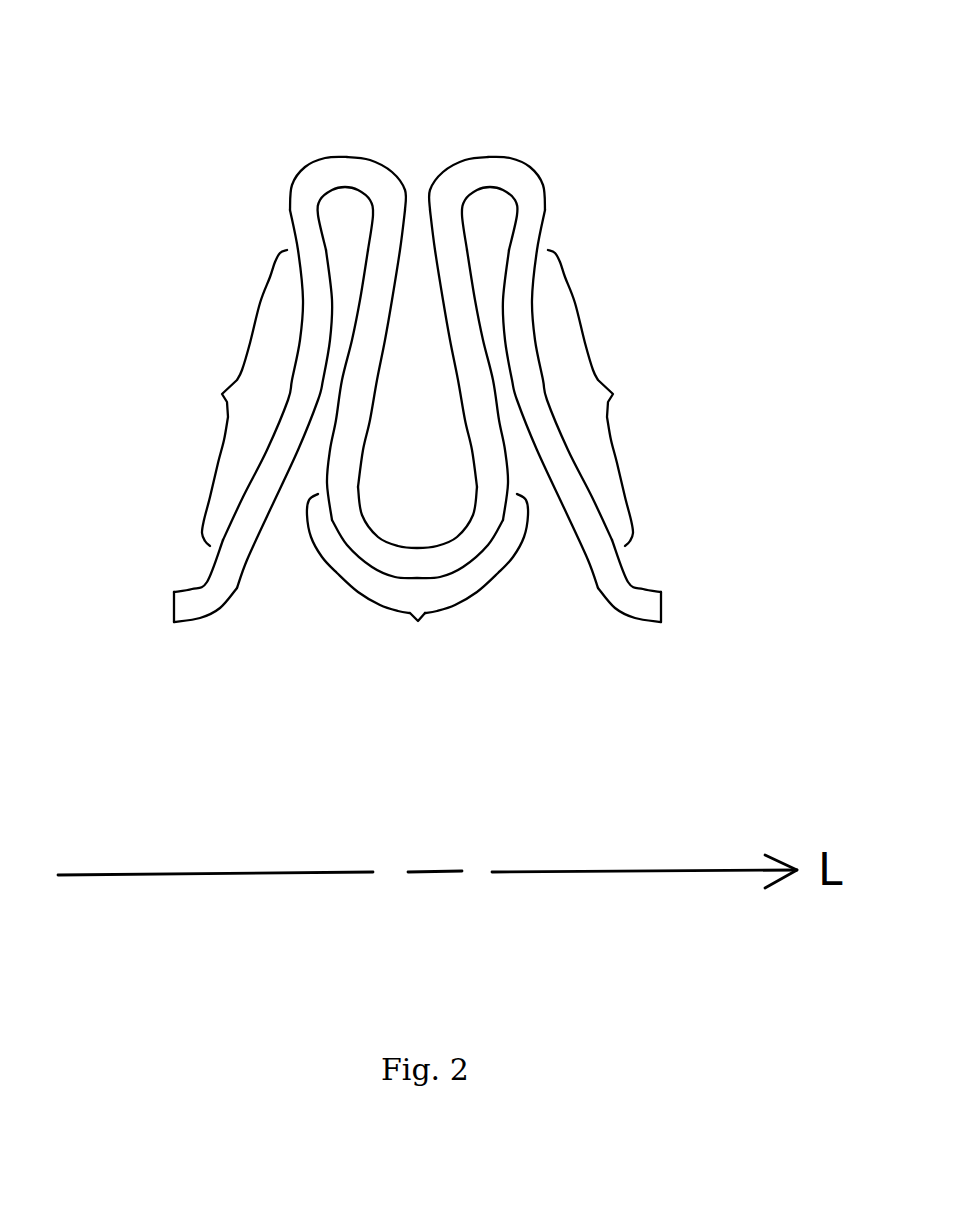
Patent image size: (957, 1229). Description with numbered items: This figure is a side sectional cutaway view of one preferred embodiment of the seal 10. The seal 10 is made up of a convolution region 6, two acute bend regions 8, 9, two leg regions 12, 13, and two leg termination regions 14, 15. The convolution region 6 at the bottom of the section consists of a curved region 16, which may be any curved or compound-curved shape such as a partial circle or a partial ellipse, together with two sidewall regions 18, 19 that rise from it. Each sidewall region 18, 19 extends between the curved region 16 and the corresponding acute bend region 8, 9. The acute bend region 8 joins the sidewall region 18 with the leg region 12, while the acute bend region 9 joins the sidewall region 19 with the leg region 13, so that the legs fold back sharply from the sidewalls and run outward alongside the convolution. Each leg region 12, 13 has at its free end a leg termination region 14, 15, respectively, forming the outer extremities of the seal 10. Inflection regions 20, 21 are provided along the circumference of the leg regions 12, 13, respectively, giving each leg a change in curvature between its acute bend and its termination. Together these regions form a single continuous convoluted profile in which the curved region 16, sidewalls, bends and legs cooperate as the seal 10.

The convolution region 6 is at (505, 585).
The acute bend region 8 is at (492, 170).
The acute bend region 9 is at (353, 172).
The seal 10 is at (257, 120).
The leg region 12 is at (606, 398).
The leg region 13 is at (229, 398).
The leg termination region 14 is at (630, 587).
The leg termination region 15 is at (208, 590).
The curved region 16 is at (417, 576).
The sidewall region 18 is at (475, 407).
The sidewall region 19 is at (372, 343).
The inflection region 20 is at (525, 350).
The inflection region 21 is at (312, 357).